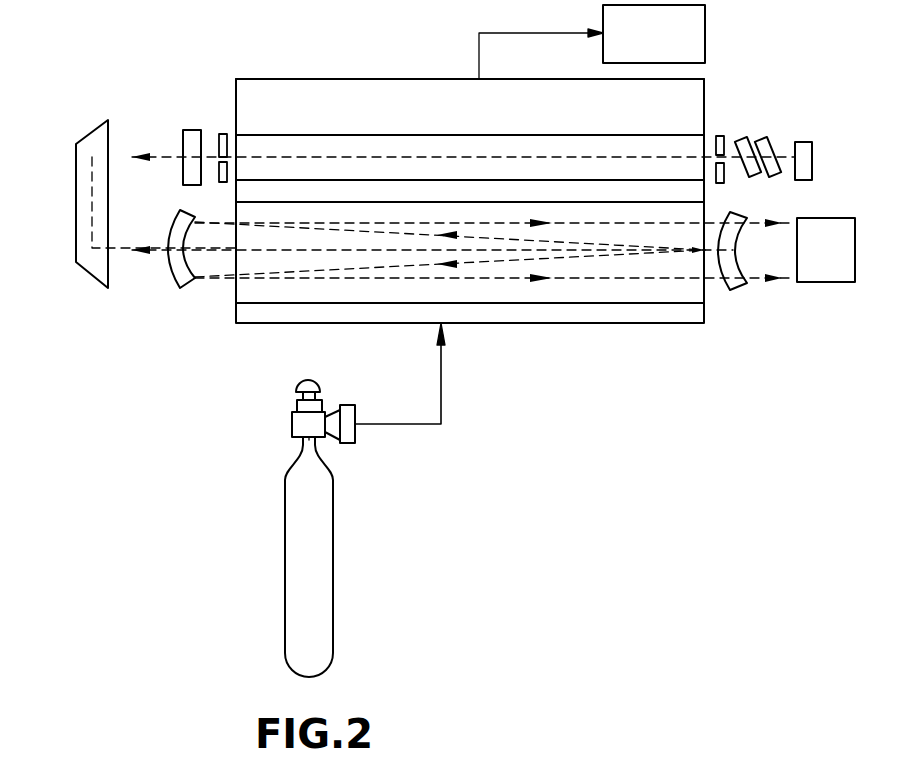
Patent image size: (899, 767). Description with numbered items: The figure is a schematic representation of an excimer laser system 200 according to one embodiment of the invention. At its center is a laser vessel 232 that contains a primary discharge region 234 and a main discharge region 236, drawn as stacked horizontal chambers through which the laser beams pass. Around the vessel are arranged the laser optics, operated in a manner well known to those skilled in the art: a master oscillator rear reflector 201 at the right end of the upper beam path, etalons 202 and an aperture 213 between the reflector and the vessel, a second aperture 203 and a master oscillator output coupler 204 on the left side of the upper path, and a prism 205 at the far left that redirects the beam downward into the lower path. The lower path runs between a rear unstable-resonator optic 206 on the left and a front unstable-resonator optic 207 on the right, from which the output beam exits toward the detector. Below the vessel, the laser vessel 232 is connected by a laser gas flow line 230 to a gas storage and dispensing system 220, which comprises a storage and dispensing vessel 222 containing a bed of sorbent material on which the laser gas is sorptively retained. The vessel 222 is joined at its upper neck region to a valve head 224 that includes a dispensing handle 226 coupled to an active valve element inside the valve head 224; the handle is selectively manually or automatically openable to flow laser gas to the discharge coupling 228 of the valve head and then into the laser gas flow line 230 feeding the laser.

The excimer laser system 200 is at (252, 42).
The master oscillator rear reflector 201 is at (812, 152).
The etalons 202 is at (762, 140).
The aperture 203 is at (219, 136).
The master oscillator output coupler 204 is at (191, 130).
The prism 205 is at (76, 218).
The rear unstable-resonator optic 206 is at (190, 288).
The front unstable-resonator optic 207 is at (742, 290).
The aperture 213 is at (720, 136).
The gas storage and dispensing system 220 is at (250, 581).
The storage and dispensing vessel 222 is at (333, 590).
The valve head 224 is at (292, 425).
The dispensing handle 226 is at (300, 380).
The discharge coupling 228 is at (350, 443).
The laser gas flow line 230 is at (441, 388).
The laser vessel 232 is at (362, 79).
The primary discharge region 234 is at (388, 135).
The main discharge region 236 is at (588, 303).